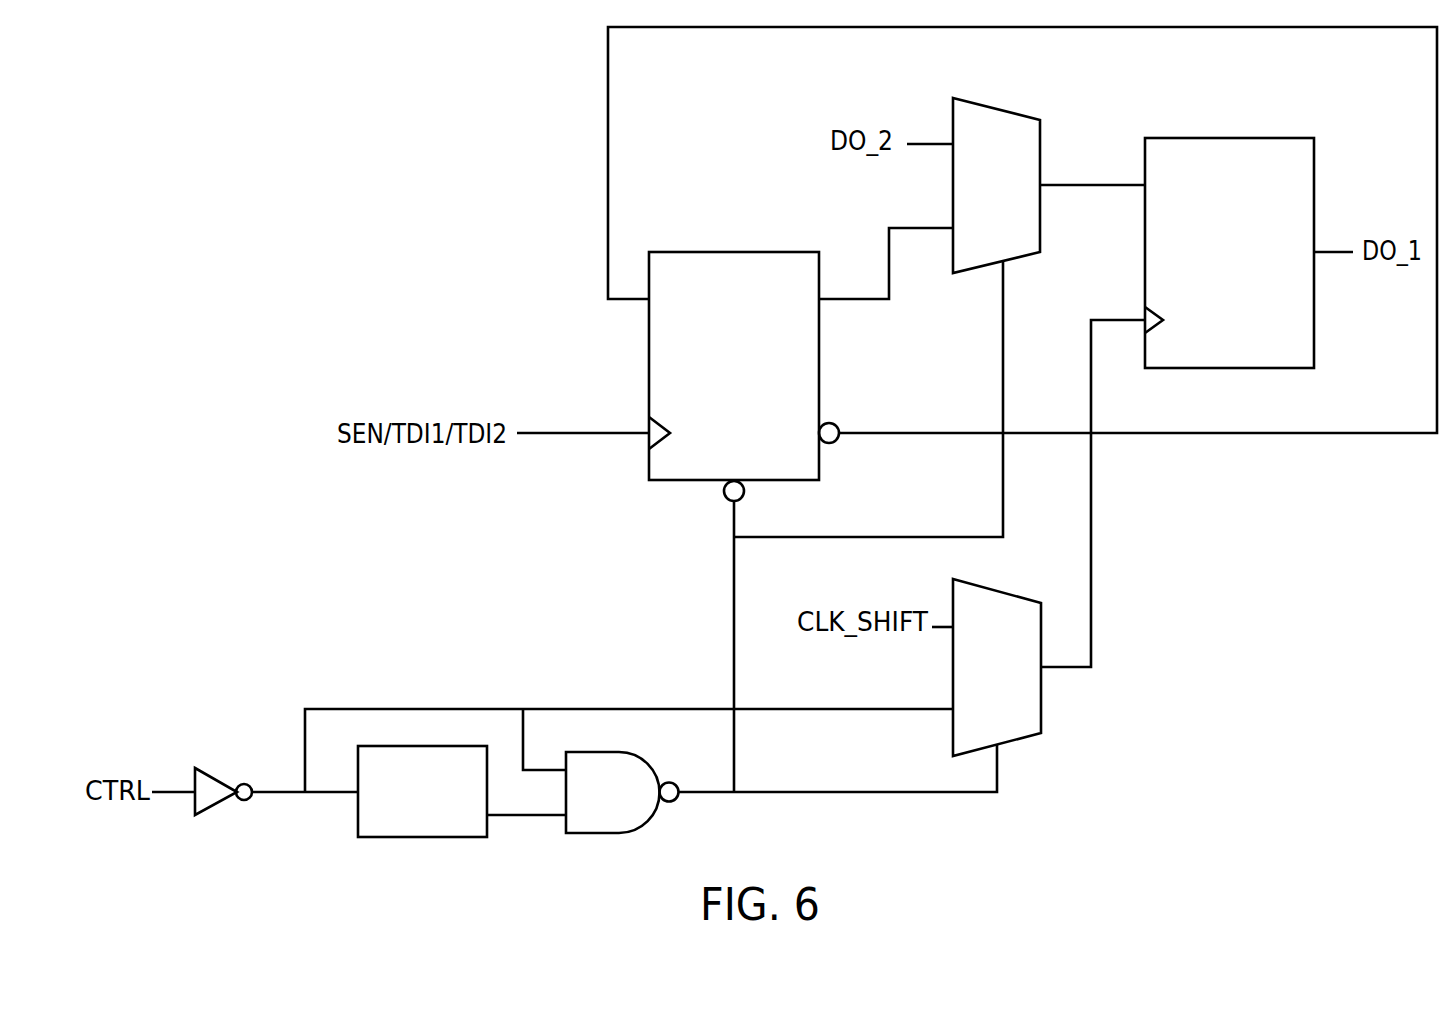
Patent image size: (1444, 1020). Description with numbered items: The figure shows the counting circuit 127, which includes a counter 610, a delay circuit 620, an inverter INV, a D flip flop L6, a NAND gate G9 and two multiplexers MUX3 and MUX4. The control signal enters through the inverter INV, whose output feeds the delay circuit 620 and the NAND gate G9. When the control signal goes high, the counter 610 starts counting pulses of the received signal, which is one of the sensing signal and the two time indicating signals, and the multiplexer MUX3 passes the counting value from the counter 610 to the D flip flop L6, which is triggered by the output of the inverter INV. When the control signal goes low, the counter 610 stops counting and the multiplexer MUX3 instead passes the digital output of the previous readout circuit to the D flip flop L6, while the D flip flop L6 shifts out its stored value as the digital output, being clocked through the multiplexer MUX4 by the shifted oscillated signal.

The counting circuit 127 is at (148, 50).
The counter 610 is at (734, 252).
The D flip flop L6 is at (1229, 138).
The multiplexer MUX3 is at (996, 185).
The multiplexer MUX4 is at (997, 667).
The inverter INV is at (243, 783).
The delay circuit 620 is at (405, 837).
The NAND gate G9 is at (590, 833).